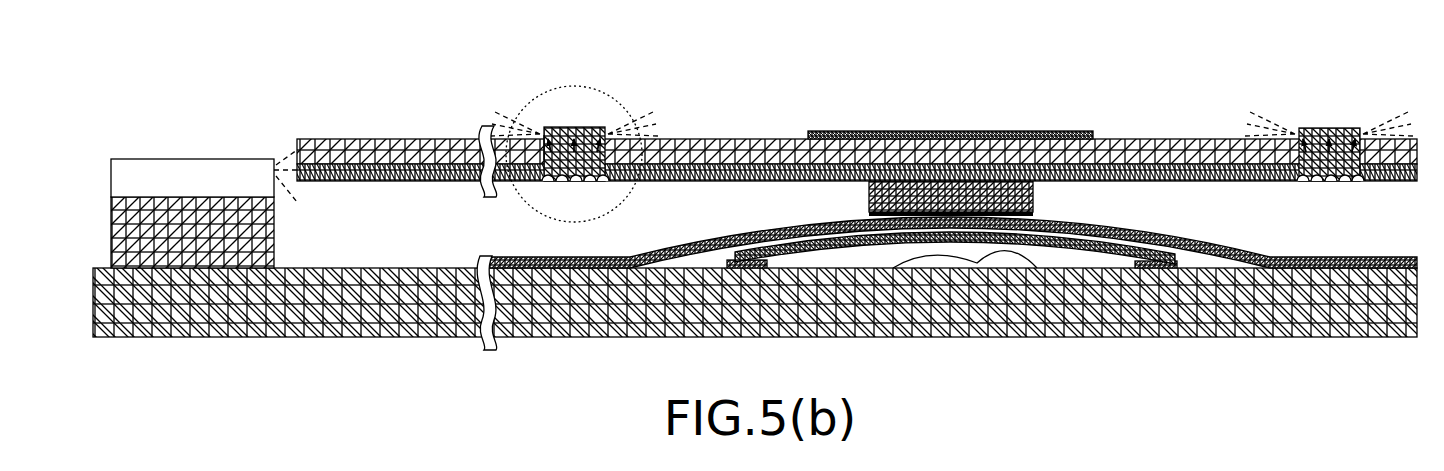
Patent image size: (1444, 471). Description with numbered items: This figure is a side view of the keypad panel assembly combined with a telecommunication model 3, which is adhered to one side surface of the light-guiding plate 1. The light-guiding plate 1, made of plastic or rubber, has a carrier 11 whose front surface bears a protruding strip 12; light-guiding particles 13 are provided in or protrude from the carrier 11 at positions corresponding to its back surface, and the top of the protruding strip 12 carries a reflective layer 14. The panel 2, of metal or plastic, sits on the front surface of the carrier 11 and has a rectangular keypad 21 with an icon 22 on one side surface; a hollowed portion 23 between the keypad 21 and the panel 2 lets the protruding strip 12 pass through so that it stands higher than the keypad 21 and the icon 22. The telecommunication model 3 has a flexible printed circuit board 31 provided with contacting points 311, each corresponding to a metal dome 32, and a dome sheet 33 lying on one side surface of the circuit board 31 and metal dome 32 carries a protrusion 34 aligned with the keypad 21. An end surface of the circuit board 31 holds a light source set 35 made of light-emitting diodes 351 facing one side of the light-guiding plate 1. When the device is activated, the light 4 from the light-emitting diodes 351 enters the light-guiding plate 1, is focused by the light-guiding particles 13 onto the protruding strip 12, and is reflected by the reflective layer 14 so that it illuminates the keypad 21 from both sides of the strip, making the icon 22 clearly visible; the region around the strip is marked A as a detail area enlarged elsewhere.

The light-guiding plate 1 is at (857, 209).
The carrier 11 is at (703, 173).
The protruding strip 12 is at (919, 136).
The light-guiding particles 13 is at (557, 182).
The reflective layer 14 is at (576, 127).
The panel 2 is at (857, 101).
The keypad 21 is at (1175, 140).
The icon 22 is at (940, 131).
The hollowed portion 23 is at (551, 150).
The telecommunication model 3 is at (755, 247).
The flexible printed circuit board 31 is at (1265, 318).
The contacting points 311 is at (1040, 268).
The metal dome 32 is at (1070, 244).
The dome sheet 33 is at (1210, 244).
The protrusion 34 is at (1037, 194).
The light source set 35 is at (192, 172).
The light-emitting diode 351 is at (190, 176).
The light 4 is at (295, 158).
The detail region A is at (548, 86).